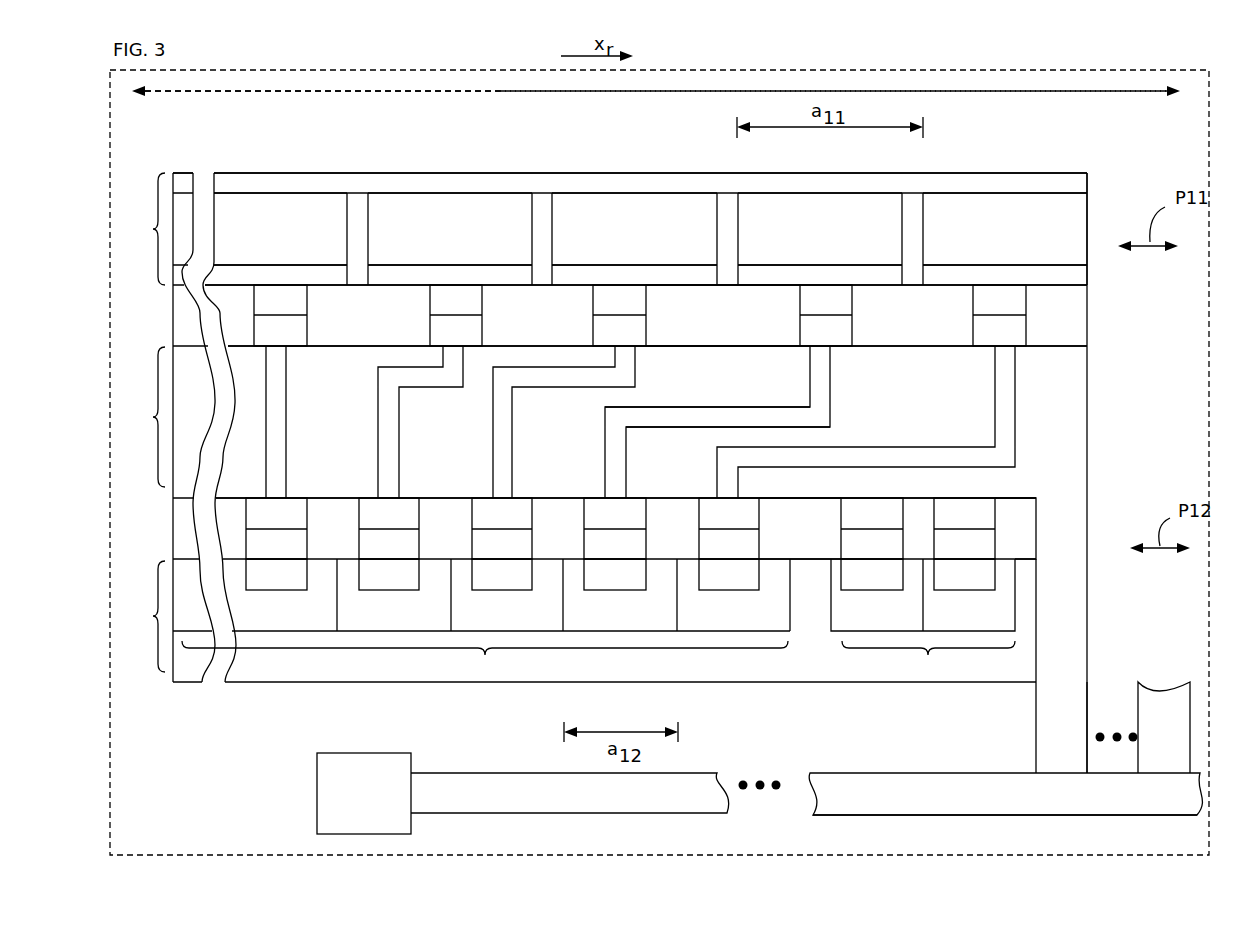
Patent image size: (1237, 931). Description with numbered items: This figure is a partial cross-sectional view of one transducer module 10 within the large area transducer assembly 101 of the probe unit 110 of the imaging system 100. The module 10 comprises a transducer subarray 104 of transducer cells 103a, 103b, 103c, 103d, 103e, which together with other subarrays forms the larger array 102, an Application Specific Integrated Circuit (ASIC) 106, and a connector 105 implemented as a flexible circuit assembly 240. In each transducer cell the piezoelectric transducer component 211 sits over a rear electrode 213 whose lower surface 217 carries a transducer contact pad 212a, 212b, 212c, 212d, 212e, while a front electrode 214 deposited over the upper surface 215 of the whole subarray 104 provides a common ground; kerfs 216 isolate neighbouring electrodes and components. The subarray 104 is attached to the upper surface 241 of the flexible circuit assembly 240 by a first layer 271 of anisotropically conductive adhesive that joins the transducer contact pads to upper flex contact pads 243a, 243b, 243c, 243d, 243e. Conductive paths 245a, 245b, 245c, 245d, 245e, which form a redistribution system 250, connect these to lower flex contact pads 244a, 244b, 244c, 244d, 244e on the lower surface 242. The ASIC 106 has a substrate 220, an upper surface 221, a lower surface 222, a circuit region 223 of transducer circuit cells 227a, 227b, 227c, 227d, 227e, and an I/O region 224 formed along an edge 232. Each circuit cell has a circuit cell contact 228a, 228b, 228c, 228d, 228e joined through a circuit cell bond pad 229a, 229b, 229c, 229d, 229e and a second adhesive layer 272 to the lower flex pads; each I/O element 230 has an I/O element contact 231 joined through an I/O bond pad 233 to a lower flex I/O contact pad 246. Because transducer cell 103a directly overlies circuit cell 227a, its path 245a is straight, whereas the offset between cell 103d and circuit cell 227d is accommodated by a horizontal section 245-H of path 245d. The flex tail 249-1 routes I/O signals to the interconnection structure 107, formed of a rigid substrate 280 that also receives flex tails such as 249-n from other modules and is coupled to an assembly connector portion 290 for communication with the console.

The transducer module 10 is at (305, 140).
The system 100 is at (1172, 58).
The transducer assembly 101 is at (963, 90).
The array 102 is at (1098, 203).
The transducer cell 103a is at (248, 224).
The transducer cell 103b is at (383, 224).
The transducer cell 103c is at (568, 224).
The transducer cell 103d is at (763, 224).
The transducer cell 103e is at (935, 224).
The transducer subarray 104 is at (600, 229).
The connector 105 is at (1090, 437).
The Application Specific Integrated Circuit (ASIC) 106 is at (574, 621).
The interconnection structure 107 is at (913, 815).
The probe unit 110 is at (493, 70).
The transducer component 211 is at (1053, 213).
The transducer contact pad 212a is at (258, 309).
The transducer contact pad 212b is at (434, 309).
The transducer contact pad 212c is at (597, 309).
The transducer contact pad 212d is at (804, 309).
The transducer contact pad 212e is at (977, 309).
The rear electrode 213 is at (1065, 275).
The front electrode 214 is at (942, 183).
The upper surface 215 is at (462, 193).
The kerf 216 is at (357, 213).
The lower surface 217 is at (1065, 285).
The substrate 220 is at (791, 673).
The upper surface 221 is at (1023, 557).
The lower surface 222 is at (1036, 682).
The circuit region 223 is at (485, 658).
The I/O region 224 is at (928, 657).
The transducer circuit cell 227a is at (249, 622).
The transducer circuit cell 227b is at (383, 622).
The transducer circuit cell 227c is at (506, 622).
The transducer circuit cell 227d is at (598, 622).
The transducer circuit cell 227e is at (711, 622).
The circuit cell contact 228a is at (254, 584).
The circuit cell contact 228b is at (367, 584).
The circuit cell contact 228c is at (480, 584).
The circuit cell contact 228d is at (593, 584).
The circuit cell contact 228e is at (707, 584).
The circuit cell bond pad 229a is at (254, 554).
The circuit cell bond pad 229b is at (367, 554).
The circuit cell bond pad 229c is at (480, 554).
The circuit cell bond pad 229d is at (593, 554).
The circuit cell bond pad 229e is at (707, 554).
The I/O element 230 is at (843, 622).
The I/O element contact 231 is at (855, 584).
The edge 232 is at (1038, 621).
The I/O bond pad 233 is at (855, 554).
The flexible circuit assembly 240 is at (308, 388).
The upper surface 241 is at (245, 343).
The lower surface 242 is at (235, 500).
The upper flex contact pad 243a is at (258, 341).
The upper flex contact pad 243b is at (434, 341).
The upper flex contact pad 243c is at (597, 341).
The upper flex contact pad 243d is at (804, 341).
The upper flex contact pad 243e is at (977, 341).
The lower flex contact pad 244a is at (254, 524).
The lower flex contact pad 244b is at (367, 524).
The lower flex contact pad 244c is at (480, 524).
The lower flex contact pad 244d is at (593, 524).
The lower flex contact pad 244e is at (707, 524).
The conductive path 245a is at (288, 466).
The conductive path 245b is at (403, 458).
The conductive path 245c is at (515, 458).
The conductive path 245d is at (630, 468).
The conductive path 245e is at (993, 426).
The horizontal section 245-H is at (780, 406).
The lower flex I/O contact pad 246 is at (855, 524).
The flex tail 249-1 is at (1067, 650).
The flex tail 249-n is at (1170, 720).
The redistribution system 250 is at (574, 422).
The first layer of anisotropically conductive adhesive 271 is at (710, 313).
The second layer of anisotropically conductive adhesive 272 is at (771, 529).
The rigid substrate 280 is at (977, 808).
The assembly connector portion 290 is at (340, 797).